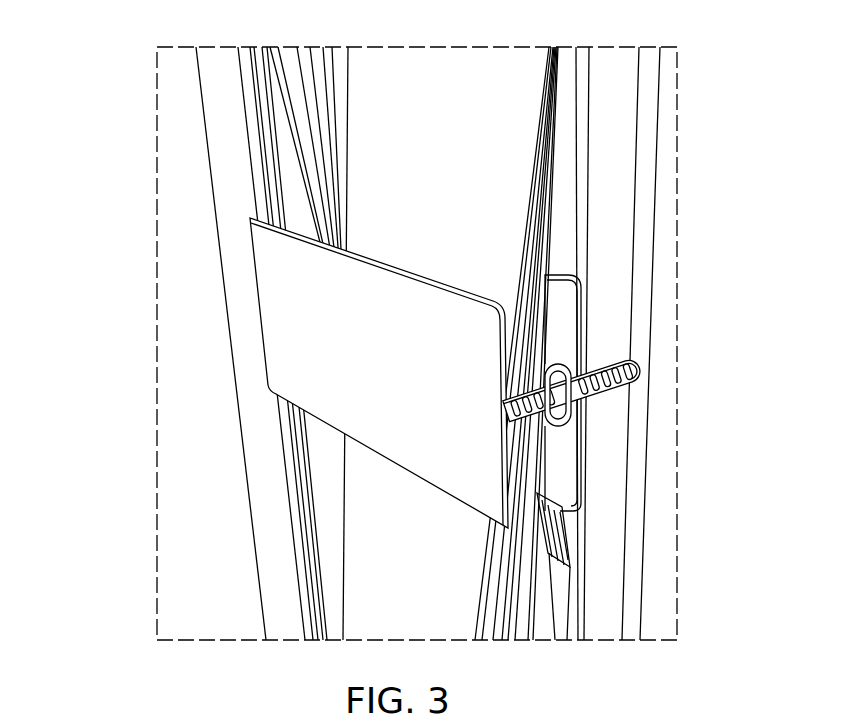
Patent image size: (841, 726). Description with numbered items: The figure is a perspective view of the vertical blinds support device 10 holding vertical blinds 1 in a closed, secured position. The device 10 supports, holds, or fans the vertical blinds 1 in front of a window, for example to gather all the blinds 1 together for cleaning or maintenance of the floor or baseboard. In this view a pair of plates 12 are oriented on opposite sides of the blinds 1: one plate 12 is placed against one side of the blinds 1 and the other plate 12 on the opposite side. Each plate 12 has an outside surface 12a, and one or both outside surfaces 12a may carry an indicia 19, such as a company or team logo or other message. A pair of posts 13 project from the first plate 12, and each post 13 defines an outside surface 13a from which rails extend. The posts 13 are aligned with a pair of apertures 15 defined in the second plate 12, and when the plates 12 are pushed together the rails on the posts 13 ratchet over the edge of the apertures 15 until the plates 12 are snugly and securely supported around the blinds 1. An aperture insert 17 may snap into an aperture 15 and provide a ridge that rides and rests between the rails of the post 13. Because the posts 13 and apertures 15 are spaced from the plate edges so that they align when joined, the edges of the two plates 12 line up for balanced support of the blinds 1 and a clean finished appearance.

The vertical blinds support device 10 is at (135, 60).
The vertical blinds 1 is at (417, 150).
The plate 12 is at (299, 399).
The outside surface 12a is at (298, 317).
The indicia 19 is at (379, 373).
The post 13 is at (624, 394).
The outside surface 13a is at (638, 373).
The aperture 15 is at (544, 425).
The aperture insert 17 is at (549, 364).